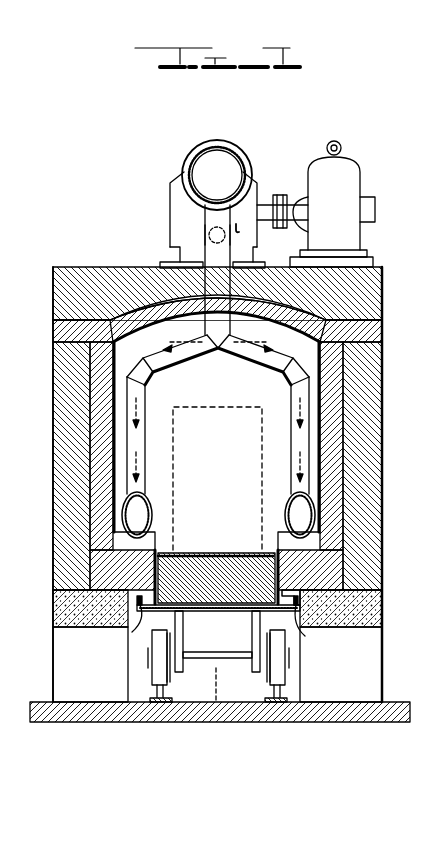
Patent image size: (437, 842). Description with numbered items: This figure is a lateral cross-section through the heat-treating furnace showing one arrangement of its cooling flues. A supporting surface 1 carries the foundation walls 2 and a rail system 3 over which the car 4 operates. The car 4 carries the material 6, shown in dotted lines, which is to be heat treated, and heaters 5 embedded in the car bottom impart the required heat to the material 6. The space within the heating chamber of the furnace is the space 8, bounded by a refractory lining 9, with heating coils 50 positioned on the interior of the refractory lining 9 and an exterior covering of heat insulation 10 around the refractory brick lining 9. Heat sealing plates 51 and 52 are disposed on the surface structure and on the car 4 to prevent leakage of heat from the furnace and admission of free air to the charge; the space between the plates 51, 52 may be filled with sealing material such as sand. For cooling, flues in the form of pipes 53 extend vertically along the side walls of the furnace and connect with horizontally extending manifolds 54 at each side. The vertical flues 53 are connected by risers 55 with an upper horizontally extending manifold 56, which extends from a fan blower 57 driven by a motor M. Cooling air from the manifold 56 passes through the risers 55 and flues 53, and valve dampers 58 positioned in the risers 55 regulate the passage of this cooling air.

The supporting surface 1 is at (354, 710).
The foundation walls 2 is at (217, 112).
The rail system 3 is at (162, 703).
The car 4 is at (230, 612).
The heaters 5 is at (216, 554).
The material 6 is at (176, 468).
The heating chamber space 8 is at (266, 340).
The refractory lining 9 is at (92, 424).
The heat insulation 10 is at (368, 300).
The heating coils 50 is at (114, 372).
The heat sealing plate 51 is at (132, 632).
The heat sealing plate 52 is at (305, 636).
The flues 53 is at (136, 441).
The manifolds 54 is at (153, 517).
The risers 55 is at (180, 254).
The upper manifold 56 is at (240, 153).
The fan blower 57 is at (265, 190).
The valve dampers 58 is at (205, 232).
The motor M is at (348, 178).